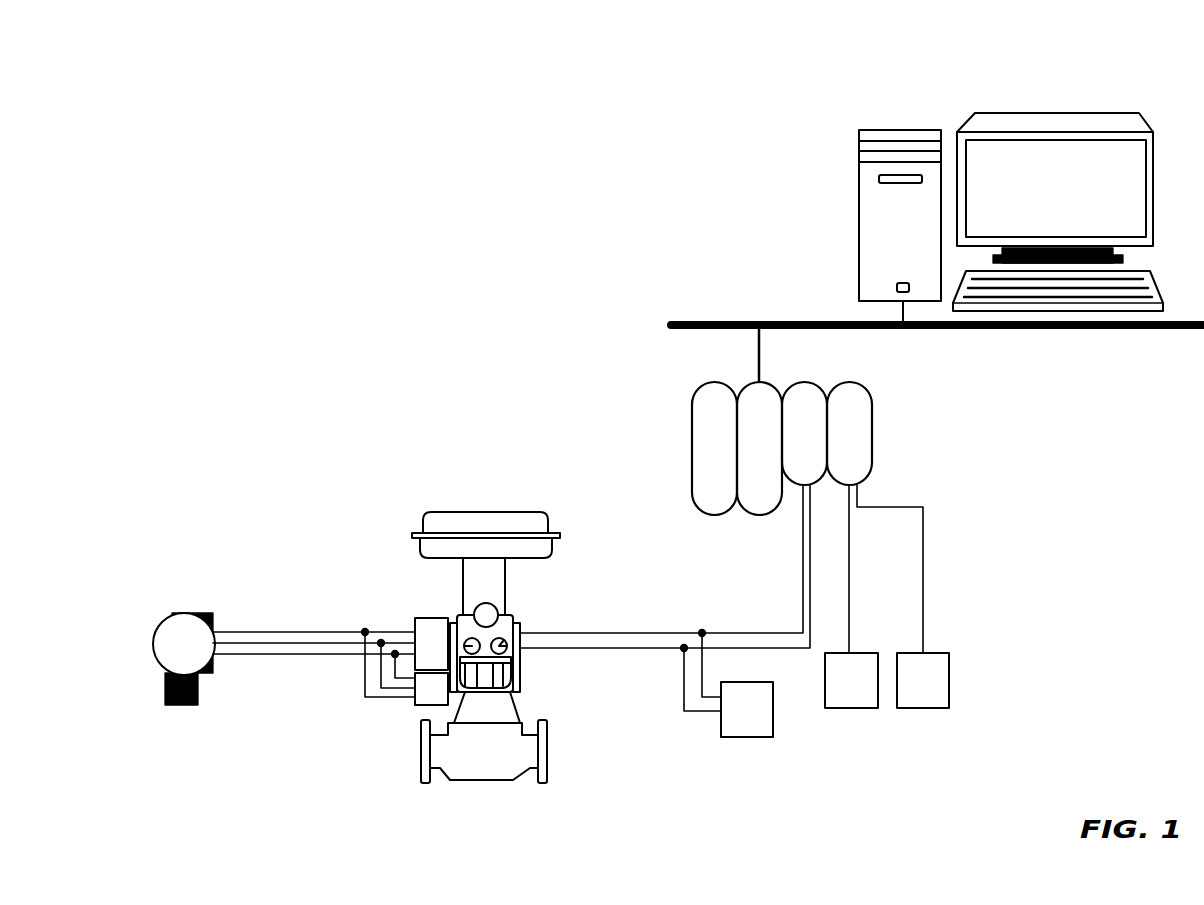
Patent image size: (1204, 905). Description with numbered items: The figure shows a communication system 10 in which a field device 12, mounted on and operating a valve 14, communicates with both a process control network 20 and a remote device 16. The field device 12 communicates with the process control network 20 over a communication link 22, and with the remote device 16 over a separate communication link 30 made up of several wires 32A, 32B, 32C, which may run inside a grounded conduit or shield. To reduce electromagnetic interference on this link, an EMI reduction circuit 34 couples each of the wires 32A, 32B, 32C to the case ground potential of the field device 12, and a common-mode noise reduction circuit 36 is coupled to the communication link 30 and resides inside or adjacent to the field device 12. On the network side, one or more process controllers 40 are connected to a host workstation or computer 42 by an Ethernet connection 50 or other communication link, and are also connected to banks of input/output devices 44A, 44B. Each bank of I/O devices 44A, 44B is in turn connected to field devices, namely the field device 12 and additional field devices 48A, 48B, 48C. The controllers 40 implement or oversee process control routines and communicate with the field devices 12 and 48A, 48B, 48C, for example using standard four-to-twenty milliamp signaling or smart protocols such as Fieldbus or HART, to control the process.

The communication system 10 is at (515, 140).
The field device 12 is at (514, 660).
The valve 14 is at (528, 768).
The remote device 16 is at (153, 632).
The process control network 20 is at (1035, 67).
The communication link 22 is at (802, 598).
The communication link 30 is at (298, 608).
The wire 32A is at (242, 632).
The wire 32B is at (288, 643).
The wire 32C is at (323, 654).
The EMI reduction circuit 34 is at (413, 698).
The common-mode noise reduction circuit 36 is at (433, 618).
The process controller 40 is at (772, 382).
The host workstation or computer 42 is at (860, 230).
The input/output (I/O) device 44A is at (803, 382).
The input/output (I/O) device 44B is at (872, 432).
The field device 48A is at (737, 738).
The field device 48B is at (855, 708).
The field device 48C is at (950, 672).
The Ethernet connection 50 is at (992, 330).